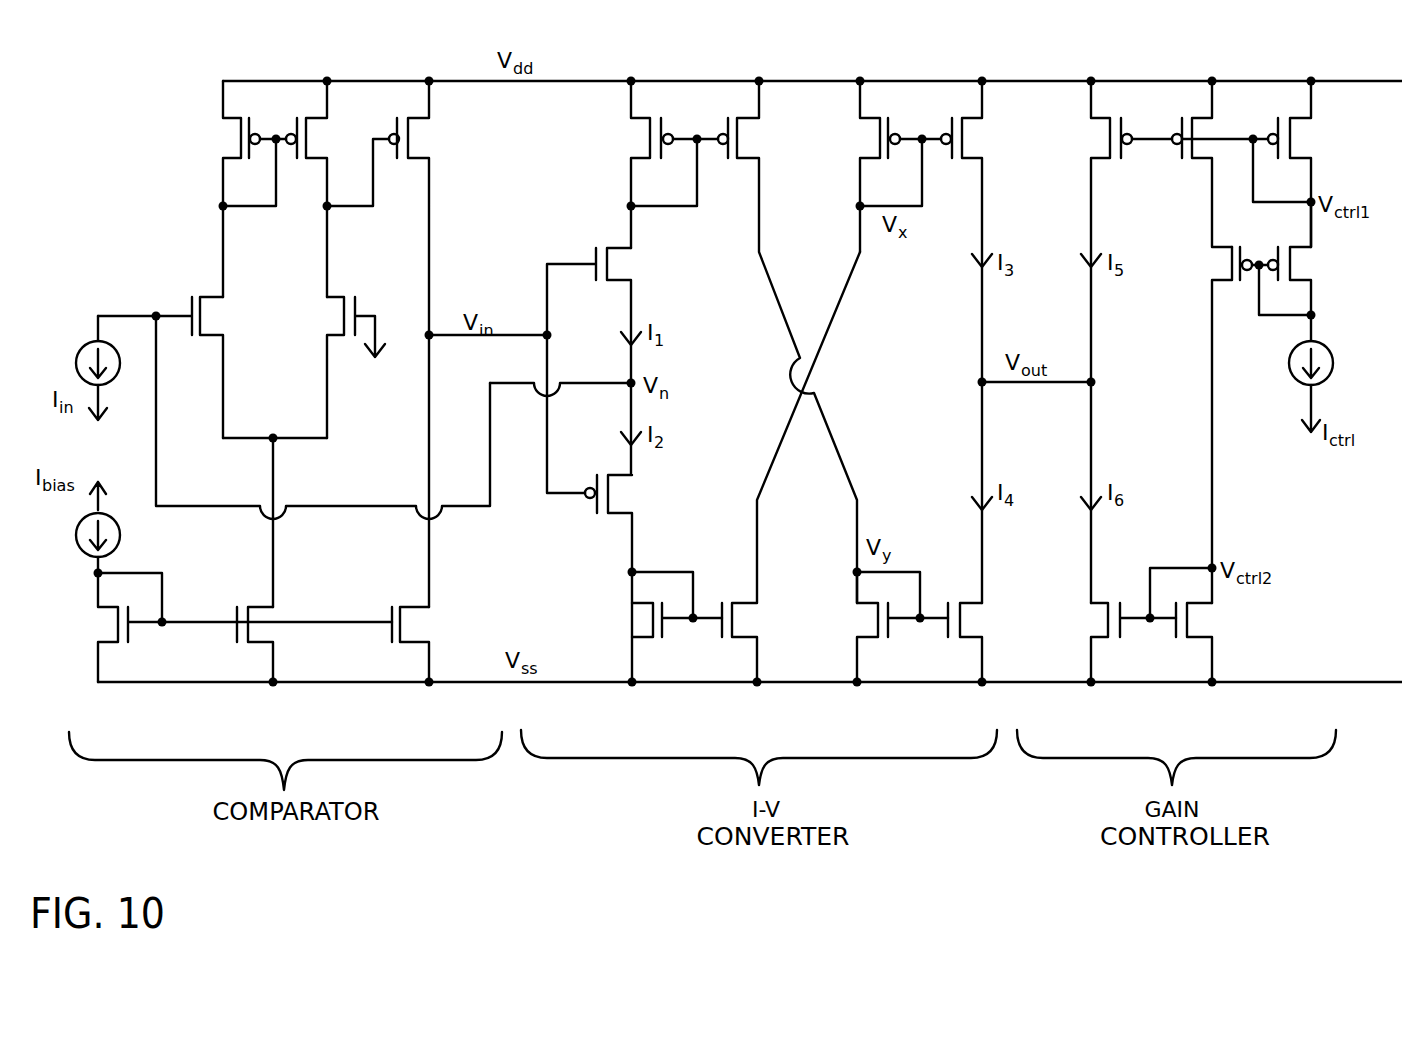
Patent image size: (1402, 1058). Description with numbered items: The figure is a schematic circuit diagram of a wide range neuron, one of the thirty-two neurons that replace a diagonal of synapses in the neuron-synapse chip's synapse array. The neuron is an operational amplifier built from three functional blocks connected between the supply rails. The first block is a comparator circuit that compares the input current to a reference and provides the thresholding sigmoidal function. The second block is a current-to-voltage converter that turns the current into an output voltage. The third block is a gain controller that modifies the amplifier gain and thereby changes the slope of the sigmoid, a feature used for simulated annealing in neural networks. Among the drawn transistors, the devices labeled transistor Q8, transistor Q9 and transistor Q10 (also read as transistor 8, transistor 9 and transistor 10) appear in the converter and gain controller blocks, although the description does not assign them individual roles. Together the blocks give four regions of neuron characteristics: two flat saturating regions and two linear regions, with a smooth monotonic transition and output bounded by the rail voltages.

The transistor Q8 is at (967, 381).
The transistor Q9 is at (1114, 642).
The transistor Q10 is at (1106, 342).
The transistor Q8 8 is at (967, 381).
The transistor Q9 9 is at (1114, 642).
The transistor Q10 10 is at (1106, 342).